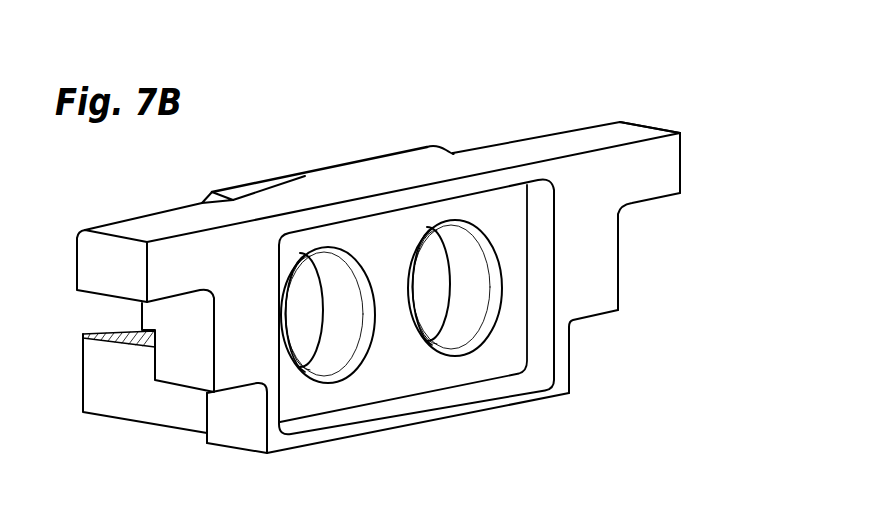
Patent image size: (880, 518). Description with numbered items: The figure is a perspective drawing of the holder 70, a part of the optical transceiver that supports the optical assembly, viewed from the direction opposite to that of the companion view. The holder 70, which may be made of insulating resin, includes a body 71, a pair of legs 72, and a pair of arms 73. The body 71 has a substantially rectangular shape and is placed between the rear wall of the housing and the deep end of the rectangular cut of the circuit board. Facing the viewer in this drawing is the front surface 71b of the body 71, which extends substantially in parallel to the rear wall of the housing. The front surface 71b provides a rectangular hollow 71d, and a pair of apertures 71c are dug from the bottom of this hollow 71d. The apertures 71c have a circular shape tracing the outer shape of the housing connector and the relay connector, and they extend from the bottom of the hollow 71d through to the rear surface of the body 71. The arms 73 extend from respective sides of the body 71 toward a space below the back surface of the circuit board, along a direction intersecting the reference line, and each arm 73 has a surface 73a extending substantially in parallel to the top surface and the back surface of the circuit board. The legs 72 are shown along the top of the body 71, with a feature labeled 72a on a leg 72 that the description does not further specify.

The holder 70 is at (682, 61).
The body 71 is at (325, 180).
The front surface 71b is at (397, 207).
The apertures 71c is at (313, 358).
The rectangular hollow 71d is at (537, 350).
The legs 72 is at (395, 101).
The shim plate tip 72a is at (422, 77).
The arms 73 is at (142, 230).
The surface 73a is at (115, 300).